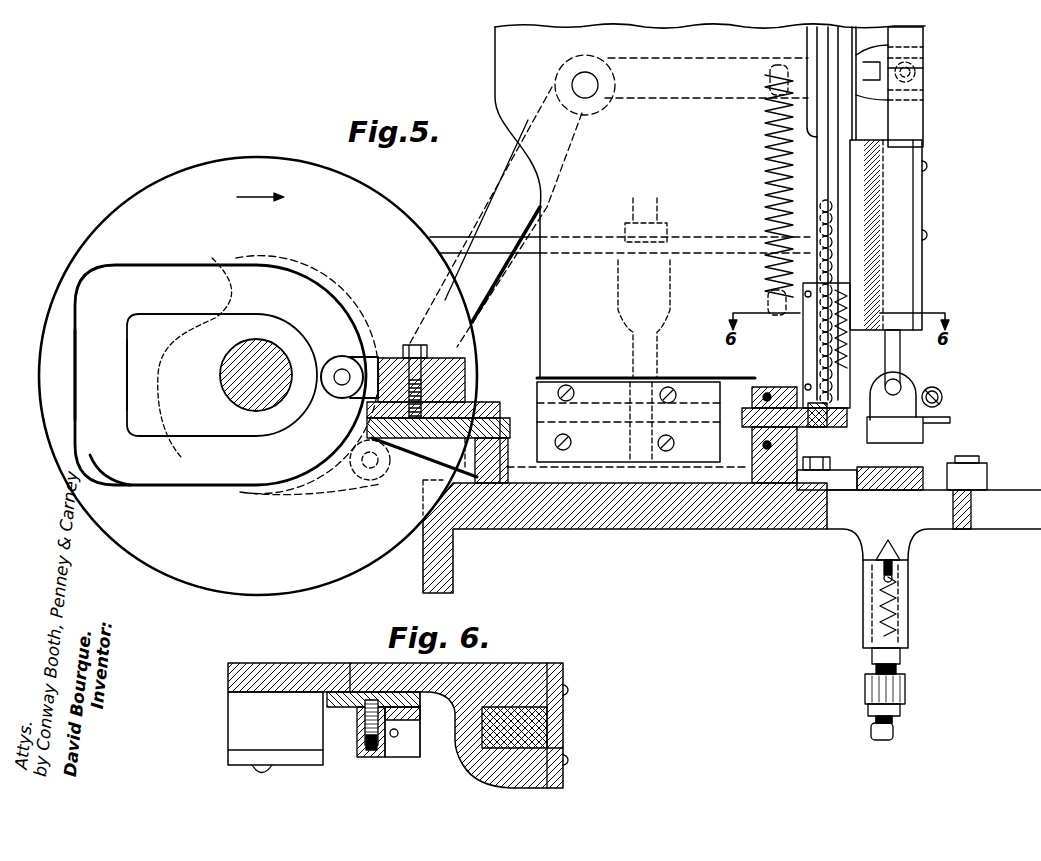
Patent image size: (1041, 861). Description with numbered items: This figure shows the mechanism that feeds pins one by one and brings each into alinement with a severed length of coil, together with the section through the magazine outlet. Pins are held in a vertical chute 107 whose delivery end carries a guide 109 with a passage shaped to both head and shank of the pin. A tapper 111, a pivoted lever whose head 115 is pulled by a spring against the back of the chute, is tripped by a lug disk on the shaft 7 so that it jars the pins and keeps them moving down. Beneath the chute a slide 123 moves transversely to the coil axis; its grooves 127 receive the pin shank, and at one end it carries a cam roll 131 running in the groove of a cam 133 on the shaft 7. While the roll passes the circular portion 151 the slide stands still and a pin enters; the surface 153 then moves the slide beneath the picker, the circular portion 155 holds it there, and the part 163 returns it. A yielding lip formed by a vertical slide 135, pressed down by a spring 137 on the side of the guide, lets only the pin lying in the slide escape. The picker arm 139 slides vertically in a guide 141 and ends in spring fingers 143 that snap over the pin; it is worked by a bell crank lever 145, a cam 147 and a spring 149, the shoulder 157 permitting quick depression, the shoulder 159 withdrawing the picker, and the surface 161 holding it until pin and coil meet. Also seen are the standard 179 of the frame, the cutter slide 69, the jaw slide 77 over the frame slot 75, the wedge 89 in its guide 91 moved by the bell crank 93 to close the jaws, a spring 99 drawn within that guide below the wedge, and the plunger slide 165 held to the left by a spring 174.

In FIG. 5, the shaft 7 is at (232, 368).
In FIG. 5, the slide 69 is at (905, 385).
In FIG. 5, the slot 75 is at (855, 531).
In FIG. 5, the slide 77 is at (856, 489).
In FIG. 5, the wedge 89 is at (904, 558).
In FIG. 5, the guide 91 is at (912, 630).
In FIG. 5, the bell crank 93 is at (905, 690).
In FIG. 5, the spring 99 is at (896, 600).
In FIG. 5, the chute 107 is at (846, 140).
In FIG. 5, the guide 109 is at (804, 351).
In FIG. 6, the guide 109 is at (370, 748).
In FIG. 5, the tapper 111 is at (444, 237).
In FIG. 5, the head 115 is at (820, 236).
In FIG. 5, the slide 123 is at (748, 436).
In FIG. 5, the grooves 127 is at (840, 437).
In FIG. 5, the cam roll 131 is at (334, 400).
In FIG. 5, the cam 133 is at (190, 580).
In FIG. 6, the vertical slide 135 is at (418, 726).
In FIG. 5, the spring 137 is at (846, 340).
In FIG. 5, the picker arm 139 is at (913, 128).
In FIG. 6, the picker arm 139 is at (530, 728).
In FIG. 5, the guide 141 is at (905, 207).
In FIG. 6, the guide 141 is at (503, 757).
In FIG. 5, the spring fingers 143 is at (903, 358).
In FIG. 5, the bell crank lever 145 is at (505, 182).
In FIG. 5, the cam 147 is at (343, 308).
In FIG. 5, the spring 149 is at (760, 152).
In FIG. 5, the circular portion 151 is at (290, 347).
In FIG. 5, the surface 153 is at (190, 313).
In FIG. 5, the circular portion 155 is at (128, 342).
In FIG. 5, the shoulder 157 is at (213, 266).
In FIG. 5, the shoulder 159 is at (140, 367).
In FIG. 5, the surface 161 is at (190, 472).
In FIG. 5, the part 163 is at (138, 440).
In FIG. 5, the slide 165 is at (945, 422).
In FIG. 5, the spring 174 is at (945, 397).
In FIG. 5, the standard 179 is at (495, 48).